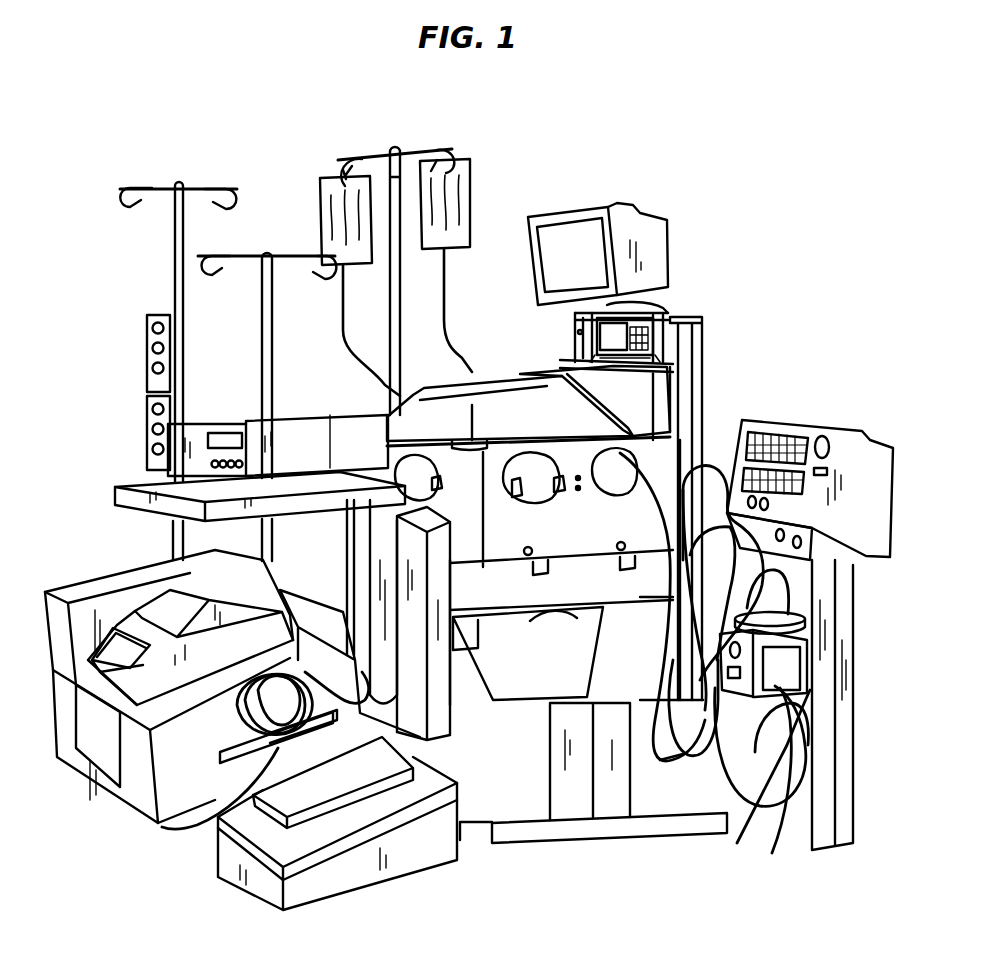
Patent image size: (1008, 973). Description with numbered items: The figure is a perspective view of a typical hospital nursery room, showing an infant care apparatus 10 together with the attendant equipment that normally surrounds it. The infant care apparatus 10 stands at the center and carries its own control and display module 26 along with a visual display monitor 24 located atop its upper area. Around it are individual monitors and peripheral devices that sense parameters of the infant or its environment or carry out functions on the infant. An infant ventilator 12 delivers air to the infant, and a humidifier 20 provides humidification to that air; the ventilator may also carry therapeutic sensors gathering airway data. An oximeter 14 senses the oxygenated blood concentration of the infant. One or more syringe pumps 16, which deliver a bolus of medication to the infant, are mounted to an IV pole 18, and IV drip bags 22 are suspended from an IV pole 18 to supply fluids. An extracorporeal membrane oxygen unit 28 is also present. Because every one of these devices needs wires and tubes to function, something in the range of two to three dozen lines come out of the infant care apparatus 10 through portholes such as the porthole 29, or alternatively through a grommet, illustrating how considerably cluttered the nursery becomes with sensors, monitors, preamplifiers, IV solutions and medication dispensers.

The infant care apparatus 10 is at (744, 361).
The infant ventilator 12 is at (838, 450).
The oximeter 14 is at (177, 459).
The syringe pumps 16 is at (143, 425).
The IV pole 18 is at (175, 252).
The humidifier 20 is at (762, 748).
The IV drip bags 22 is at (328, 207).
The visual display monitor 24 is at (657, 238).
The control and display module 26 is at (680, 332).
The extracorporeal membrane oxygen unit 28 is at (96, 650).
The porthole 29 is at (614, 467).